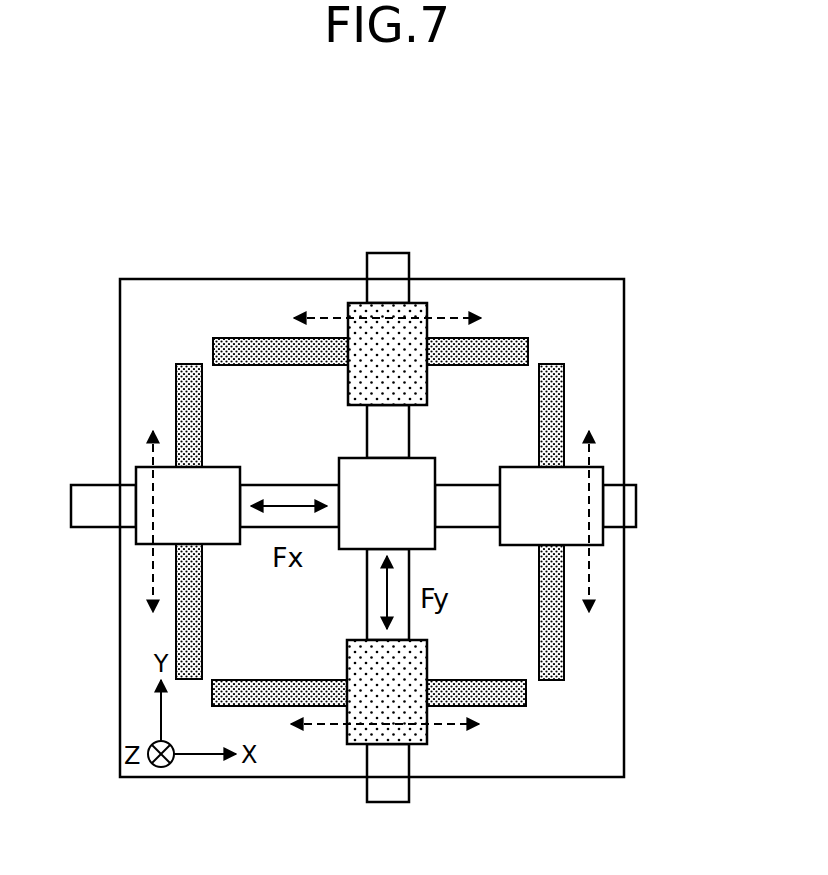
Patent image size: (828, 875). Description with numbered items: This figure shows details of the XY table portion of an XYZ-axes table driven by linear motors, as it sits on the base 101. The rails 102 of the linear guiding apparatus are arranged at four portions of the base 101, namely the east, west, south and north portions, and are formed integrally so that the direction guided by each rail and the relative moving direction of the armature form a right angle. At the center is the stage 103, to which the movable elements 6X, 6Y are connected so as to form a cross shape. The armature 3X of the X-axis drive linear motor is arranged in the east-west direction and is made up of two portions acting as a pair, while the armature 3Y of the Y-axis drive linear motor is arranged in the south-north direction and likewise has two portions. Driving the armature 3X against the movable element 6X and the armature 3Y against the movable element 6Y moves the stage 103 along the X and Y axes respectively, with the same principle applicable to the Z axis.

The base 101 is at (587, 728).
The rail of linear guiding apparatus 102 is at (564, 653).
The stage 103 is at (413, 492).
The armature of X-axis drive linear motor 3X is at (143, 478).
The armature of Y-axis drive linear motor 3Y is at (412, 327).
The movable element 6X is at (93, 513).
The movable element 6Y is at (378, 268).